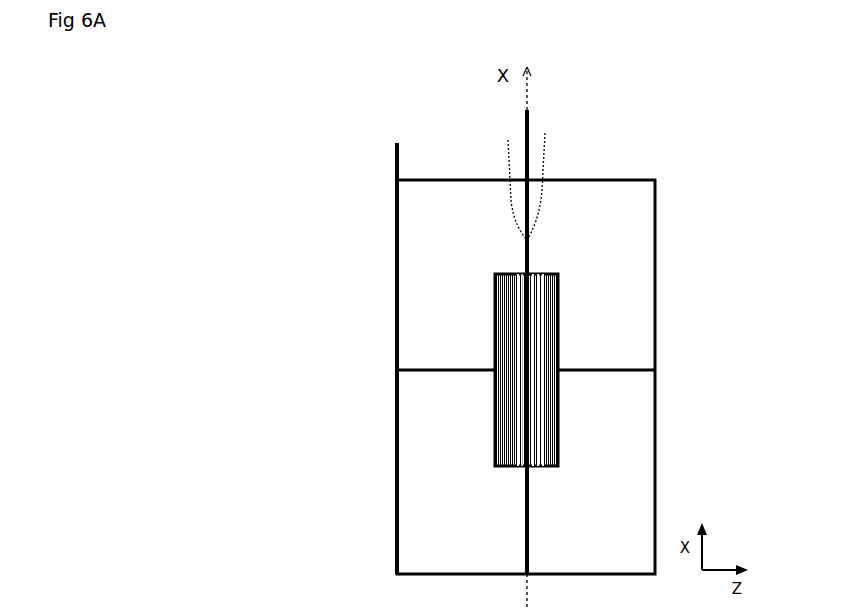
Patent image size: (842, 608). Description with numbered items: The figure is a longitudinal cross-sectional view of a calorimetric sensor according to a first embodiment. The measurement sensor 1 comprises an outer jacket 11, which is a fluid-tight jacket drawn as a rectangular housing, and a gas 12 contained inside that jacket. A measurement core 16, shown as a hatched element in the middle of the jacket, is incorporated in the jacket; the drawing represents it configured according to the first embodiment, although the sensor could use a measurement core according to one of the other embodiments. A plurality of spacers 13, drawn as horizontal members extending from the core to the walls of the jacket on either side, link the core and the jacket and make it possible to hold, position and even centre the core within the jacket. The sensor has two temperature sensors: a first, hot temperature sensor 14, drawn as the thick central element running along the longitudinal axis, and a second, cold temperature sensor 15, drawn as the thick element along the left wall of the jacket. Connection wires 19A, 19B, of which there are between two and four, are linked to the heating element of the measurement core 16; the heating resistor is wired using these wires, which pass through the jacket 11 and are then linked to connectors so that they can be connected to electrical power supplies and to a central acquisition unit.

The measurement sensor 1 is at (274, 188).
The outer jacket 11 is at (655, 227).
The gas 12 is at (598, 255).
The spacers 13 is at (520, 533).
The first temperature sensor 14 is at (528, 123).
The second temperature sensor 15 is at (395, 170).
The measurement core 16 is at (484, 363).
The connection wire 19A is at (505, 159).
The connection wire 19B is at (545, 150).